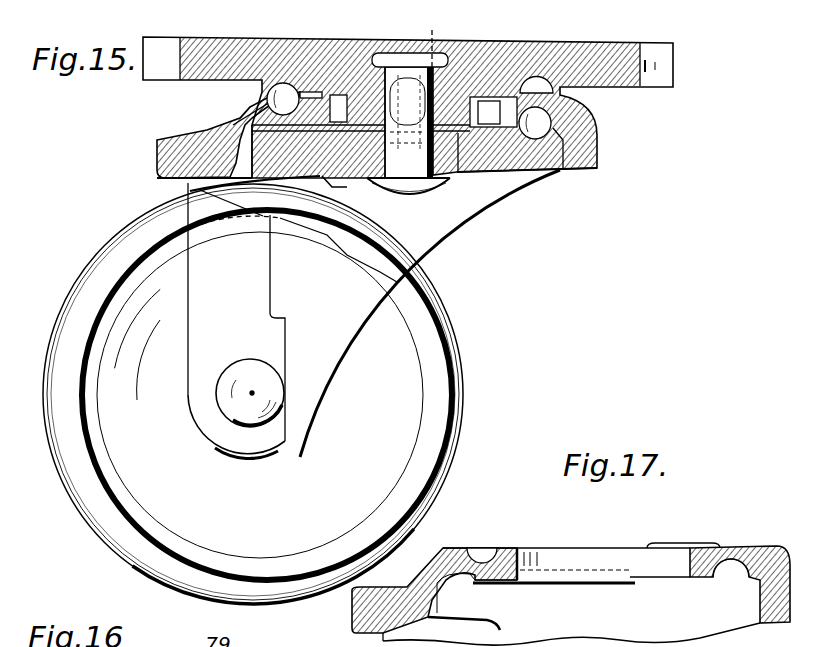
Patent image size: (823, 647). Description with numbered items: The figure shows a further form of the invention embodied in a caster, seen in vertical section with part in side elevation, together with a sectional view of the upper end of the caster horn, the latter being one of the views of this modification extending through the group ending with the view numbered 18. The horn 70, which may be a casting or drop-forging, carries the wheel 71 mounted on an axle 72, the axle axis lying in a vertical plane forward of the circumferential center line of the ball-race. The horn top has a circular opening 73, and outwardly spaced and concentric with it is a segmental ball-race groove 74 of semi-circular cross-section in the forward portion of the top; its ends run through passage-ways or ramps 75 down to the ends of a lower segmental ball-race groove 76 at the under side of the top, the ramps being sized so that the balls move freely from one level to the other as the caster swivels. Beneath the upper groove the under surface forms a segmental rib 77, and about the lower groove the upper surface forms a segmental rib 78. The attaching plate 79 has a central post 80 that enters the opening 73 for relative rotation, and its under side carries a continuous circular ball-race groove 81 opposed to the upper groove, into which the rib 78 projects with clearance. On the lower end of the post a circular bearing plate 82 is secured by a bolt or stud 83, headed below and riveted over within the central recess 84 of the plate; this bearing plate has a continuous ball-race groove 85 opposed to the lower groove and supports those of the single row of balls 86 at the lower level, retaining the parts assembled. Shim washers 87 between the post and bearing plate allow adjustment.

In FIG. 17, the flange of mounting plate 18 is at (694, 547).
In FIG. 15, the horn 70 is at (172, 158).
In FIG. 17, the horn 70 is at (396, 598).
In FIG. 15, the wheel 71 is at (407, 355).
In FIG. 15, the axle 72 is at (270, 392).
In FIG. 15, the circular opening 73 is at (480, 100).
In FIG. 17, the circular opening 73 is at (520, 557).
In FIG. 15, the segmental ball-race groove 74 is at (253, 115).
In FIG. 17, the segmental ball-race groove 74 is at (481, 556).
In FIG. 15, the passage-ways or ramps 75 is at (419, 39).
In FIG. 17, the passage-ways or ramps 75 is at (628, 567).
In FIG. 15, the segmental ball-race groove 76 is at (590, 128).
In FIG. 17, the segmental ball-race groove 76 is at (723, 570).
In FIG. 15, the segmental rib 77 is at (325, 172).
In FIG. 17, the segmental rib 77 is at (475, 582).
In FIG. 15, the segmental rib 78 is at (575, 100).
In FIG. 15, the attaching plate 79 is at (245, 54).
In FIG. 15, the central post 80 is at (373, 86).
In FIG. 15, the continuous circular ball-race groove 81 is at (292, 92).
In FIG. 15, the circular bearing plate 82 is at (500, 152).
In FIG. 15, the bolt or stud 83 is at (412, 170).
In FIG. 15, the central recess 84 is at (448, 54).
In FIG. 15, the continuous ball-race groove 85 is at (287, 166).
In FIG. 15, the balls 86 is at (277, 100).
In FIG. 15, the shim washers 87 is at (458, 140).